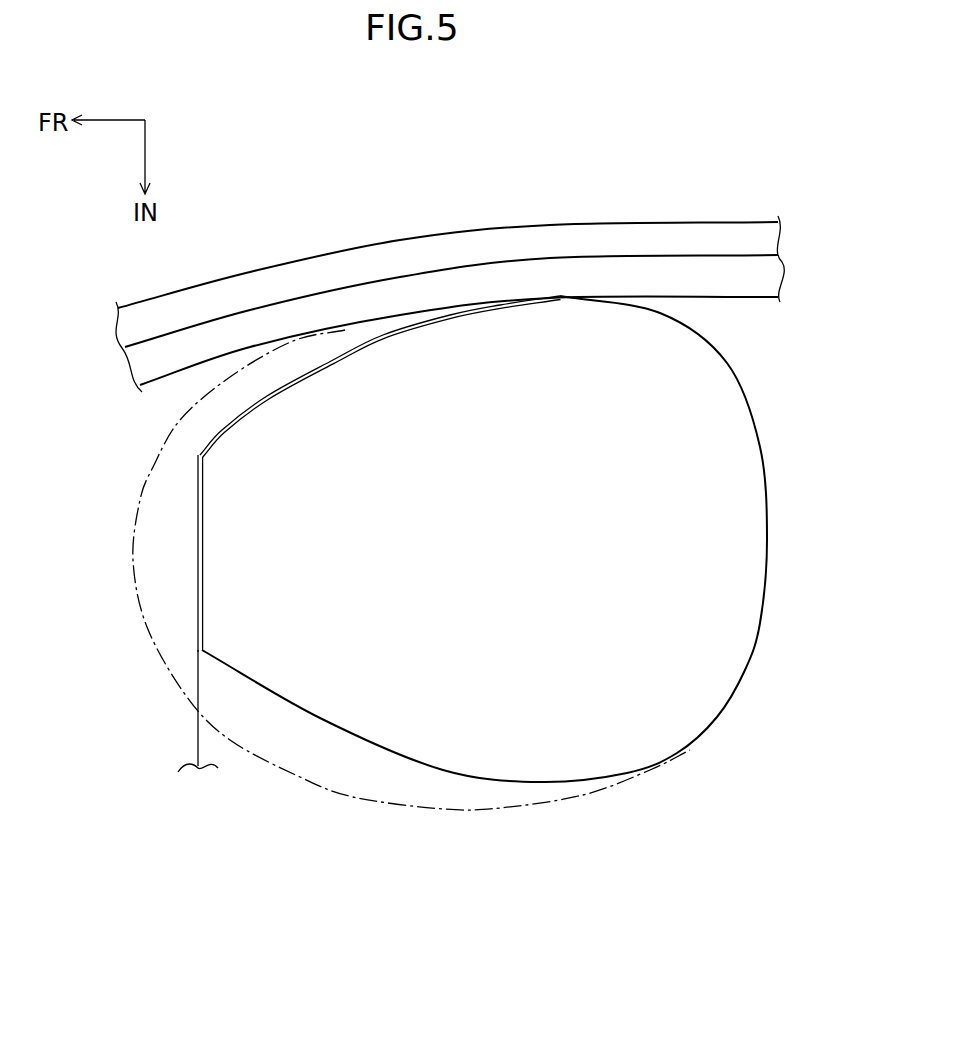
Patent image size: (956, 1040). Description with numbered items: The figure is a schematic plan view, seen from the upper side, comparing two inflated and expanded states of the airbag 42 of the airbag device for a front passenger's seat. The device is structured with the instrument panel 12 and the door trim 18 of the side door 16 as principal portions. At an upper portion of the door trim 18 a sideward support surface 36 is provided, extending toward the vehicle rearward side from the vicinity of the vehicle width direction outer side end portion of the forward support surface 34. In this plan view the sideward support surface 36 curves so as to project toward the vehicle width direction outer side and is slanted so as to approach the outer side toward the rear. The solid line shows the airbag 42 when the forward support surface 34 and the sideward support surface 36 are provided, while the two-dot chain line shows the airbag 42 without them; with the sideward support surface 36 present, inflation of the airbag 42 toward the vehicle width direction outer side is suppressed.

The instrument panel 12 is at (206, 683).
The side door 16 is at (450, 274).
The door trim 18 is at (565, 297).
The forward support surface 34 is at (203, 553).
The sideward support surface 36 is at (315, 372).
The airbag 42 is at (745, 670).